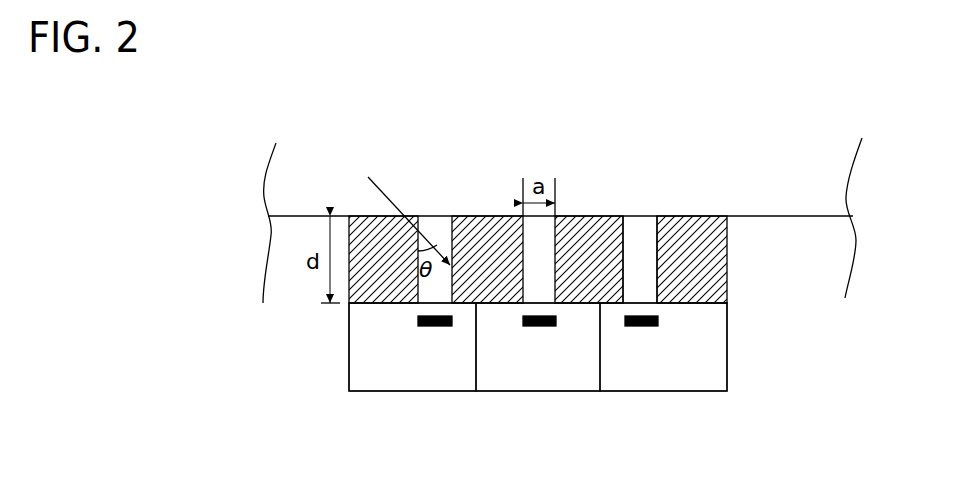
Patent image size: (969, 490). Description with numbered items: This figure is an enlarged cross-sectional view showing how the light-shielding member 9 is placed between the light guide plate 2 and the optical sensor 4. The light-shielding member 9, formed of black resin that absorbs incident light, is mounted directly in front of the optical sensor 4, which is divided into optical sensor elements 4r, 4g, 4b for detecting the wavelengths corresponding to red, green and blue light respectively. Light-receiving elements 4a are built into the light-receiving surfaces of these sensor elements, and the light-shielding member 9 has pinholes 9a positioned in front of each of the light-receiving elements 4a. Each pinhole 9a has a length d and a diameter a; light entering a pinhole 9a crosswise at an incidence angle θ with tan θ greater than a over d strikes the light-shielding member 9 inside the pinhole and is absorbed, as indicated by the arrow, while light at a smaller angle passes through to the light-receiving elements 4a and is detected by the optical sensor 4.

The light guide plate 2 is at (787, 216).
The light-shielding member 9 is at (727, 264).
The pinholes 9a is at (637, 216).
The optical sensor 4 is at (727, 342).
The light-receiving elements 4a is at (436, 325).
The optical sensor element for R light 4r is at (425, 391).
The optical sensor element for G light 4g is at (540, 391).
The optical sensor element for B light 4b is at (665, 391).